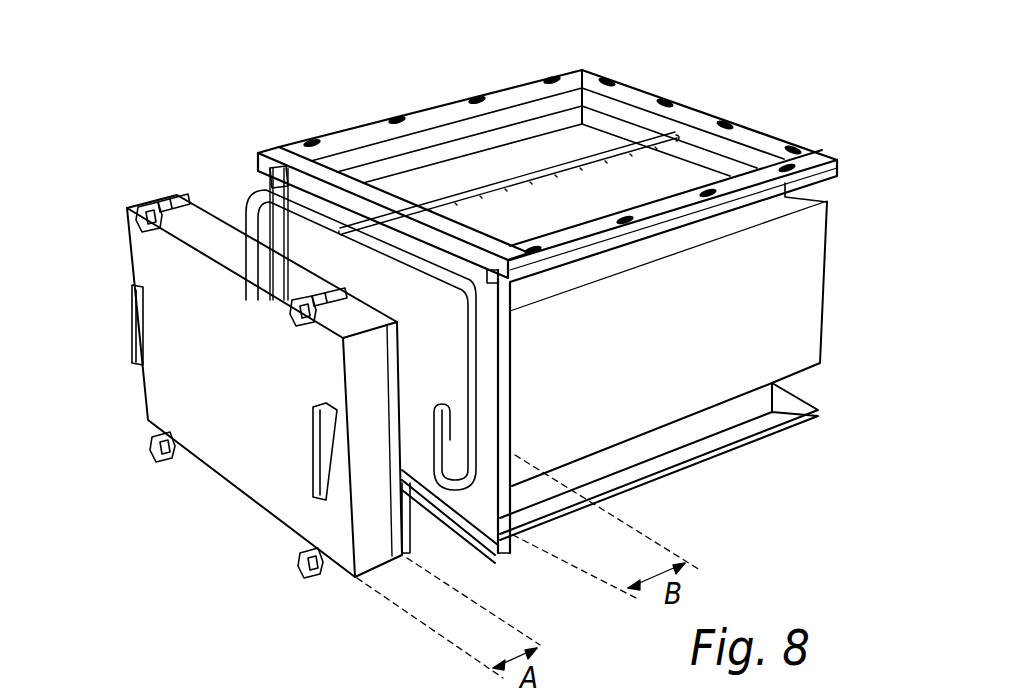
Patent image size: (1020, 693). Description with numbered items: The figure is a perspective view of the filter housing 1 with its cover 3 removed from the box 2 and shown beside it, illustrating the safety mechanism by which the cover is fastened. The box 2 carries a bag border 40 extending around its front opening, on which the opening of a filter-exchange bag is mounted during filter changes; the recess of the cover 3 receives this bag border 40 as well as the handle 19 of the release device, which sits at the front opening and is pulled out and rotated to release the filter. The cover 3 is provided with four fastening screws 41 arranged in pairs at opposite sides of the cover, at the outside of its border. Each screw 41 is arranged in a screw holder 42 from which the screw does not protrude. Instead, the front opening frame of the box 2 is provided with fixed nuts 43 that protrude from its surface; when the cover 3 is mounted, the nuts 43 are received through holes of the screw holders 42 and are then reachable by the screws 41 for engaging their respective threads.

The filter housing 1 is at (336, 78).
The box 2 is at (770, 338).
The cover 3 is at (250, 460).
The handle 19 is at (440, 420).
The bag border 40 is at (478, 373).
The fastening screws 41 is at (138, 220).
The screw holder 42 is at (162, 205).
The fixed nuts 43 is at (264, 177).